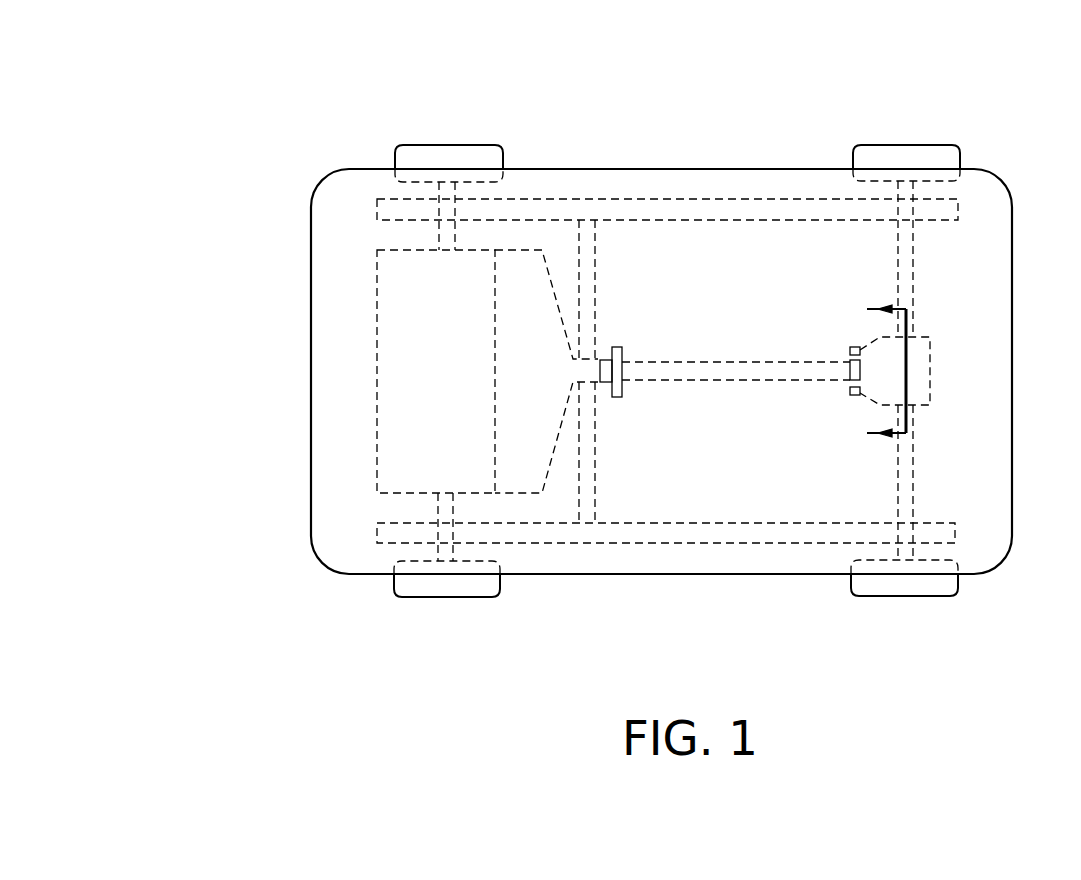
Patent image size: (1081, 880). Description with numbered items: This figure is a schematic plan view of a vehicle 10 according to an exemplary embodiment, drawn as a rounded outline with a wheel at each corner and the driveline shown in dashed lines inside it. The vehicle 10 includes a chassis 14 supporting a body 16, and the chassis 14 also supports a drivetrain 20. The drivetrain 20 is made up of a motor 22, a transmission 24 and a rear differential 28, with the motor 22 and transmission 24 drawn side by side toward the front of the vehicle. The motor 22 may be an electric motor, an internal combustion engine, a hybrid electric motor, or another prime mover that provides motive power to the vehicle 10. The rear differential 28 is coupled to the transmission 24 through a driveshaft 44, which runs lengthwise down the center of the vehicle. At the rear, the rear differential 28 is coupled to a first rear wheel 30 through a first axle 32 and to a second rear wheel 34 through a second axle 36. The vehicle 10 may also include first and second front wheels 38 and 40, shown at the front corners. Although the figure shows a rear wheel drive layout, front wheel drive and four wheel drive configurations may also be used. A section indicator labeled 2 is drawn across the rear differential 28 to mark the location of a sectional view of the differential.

The vehicle 10 is at (275, 100).
The chassis 14 is at (825, 198).
The body 16 is at (700, 575).
The drivetrain 20 is at (352, 370).
The motor 22 is at (462, 380).
The transmission 24 is at (546, 385).
The rear differential 28 is at (920, 357).
The first rear wheel 30 is at (952, 145).
The first axle 32 is at (900, 278).
The second rear wheel 34 is at (950, 595).
The second axle 36 is at (897, 497).
The first front wheel 38 is at (465, 152).
The second front wheel 40 is at (432, 590).
The driveshaft 44 is at (757, 330).
The section line 2- 2 is at (876, 371).